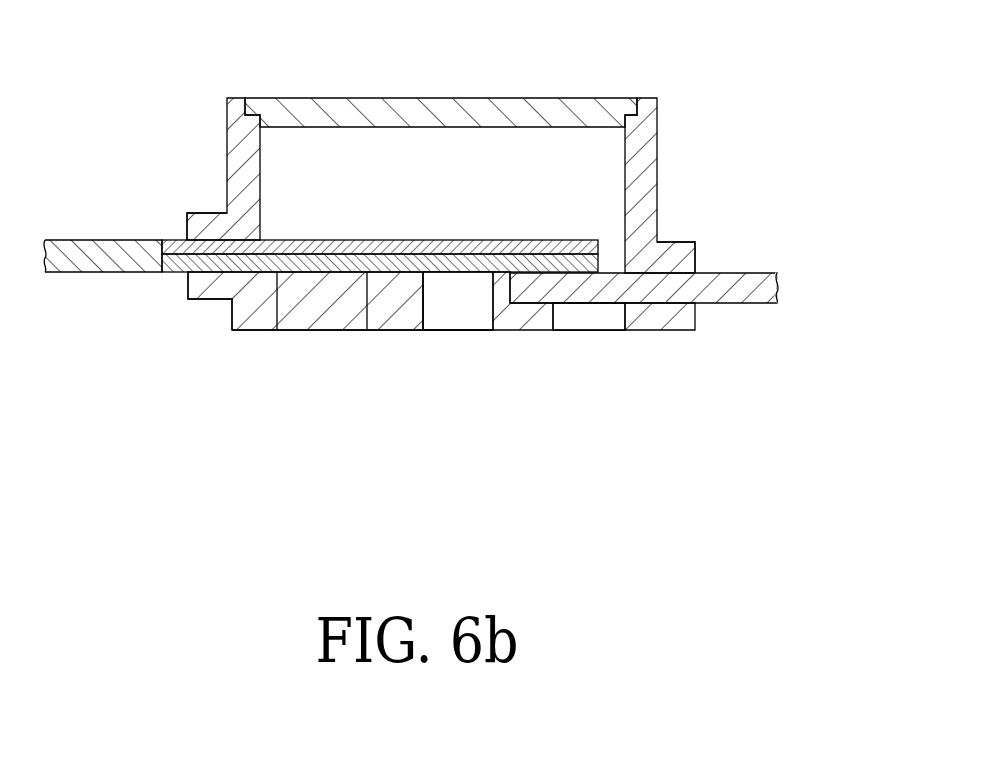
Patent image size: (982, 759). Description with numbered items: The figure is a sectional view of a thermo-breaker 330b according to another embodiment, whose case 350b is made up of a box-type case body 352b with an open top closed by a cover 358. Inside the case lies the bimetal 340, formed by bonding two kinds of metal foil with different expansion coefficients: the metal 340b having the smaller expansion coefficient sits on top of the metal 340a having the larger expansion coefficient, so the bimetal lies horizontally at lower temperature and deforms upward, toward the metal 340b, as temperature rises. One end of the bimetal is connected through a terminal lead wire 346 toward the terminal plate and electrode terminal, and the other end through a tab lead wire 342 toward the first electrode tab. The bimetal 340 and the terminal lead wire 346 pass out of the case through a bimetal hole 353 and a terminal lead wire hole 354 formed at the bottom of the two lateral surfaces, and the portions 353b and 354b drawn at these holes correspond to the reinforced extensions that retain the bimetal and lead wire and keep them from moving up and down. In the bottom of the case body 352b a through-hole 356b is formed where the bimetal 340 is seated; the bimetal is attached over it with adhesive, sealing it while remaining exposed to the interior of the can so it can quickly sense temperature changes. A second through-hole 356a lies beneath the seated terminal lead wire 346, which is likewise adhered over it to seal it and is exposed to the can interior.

The thermo-breaker 330b is at (444, 144).
The cover 358 is at (275, 105).
The bimetal hole 353 is at (167, 169).
The left wall flange 353b is at (207, 214).
The terminal lead wire hole 354 is at (719, 185).
The right wall flange 354b is at (683, 243).
The tab lead wire 342 is at (84, 262).
The case 350b is at (420, 364).
The bimetal 340 is at (431, 360).
The metal having a smaller expansion coefficient 340b is at (277, 330).
The metal having a larger expansion coefficient 340a is at (367, 330).
The case body 352b is at (207, 290).
The through-hole 356b is at (462, 312).
The through-hole 356a is at (595, 315).
The terminal lead wire 346 is at (735, 300).